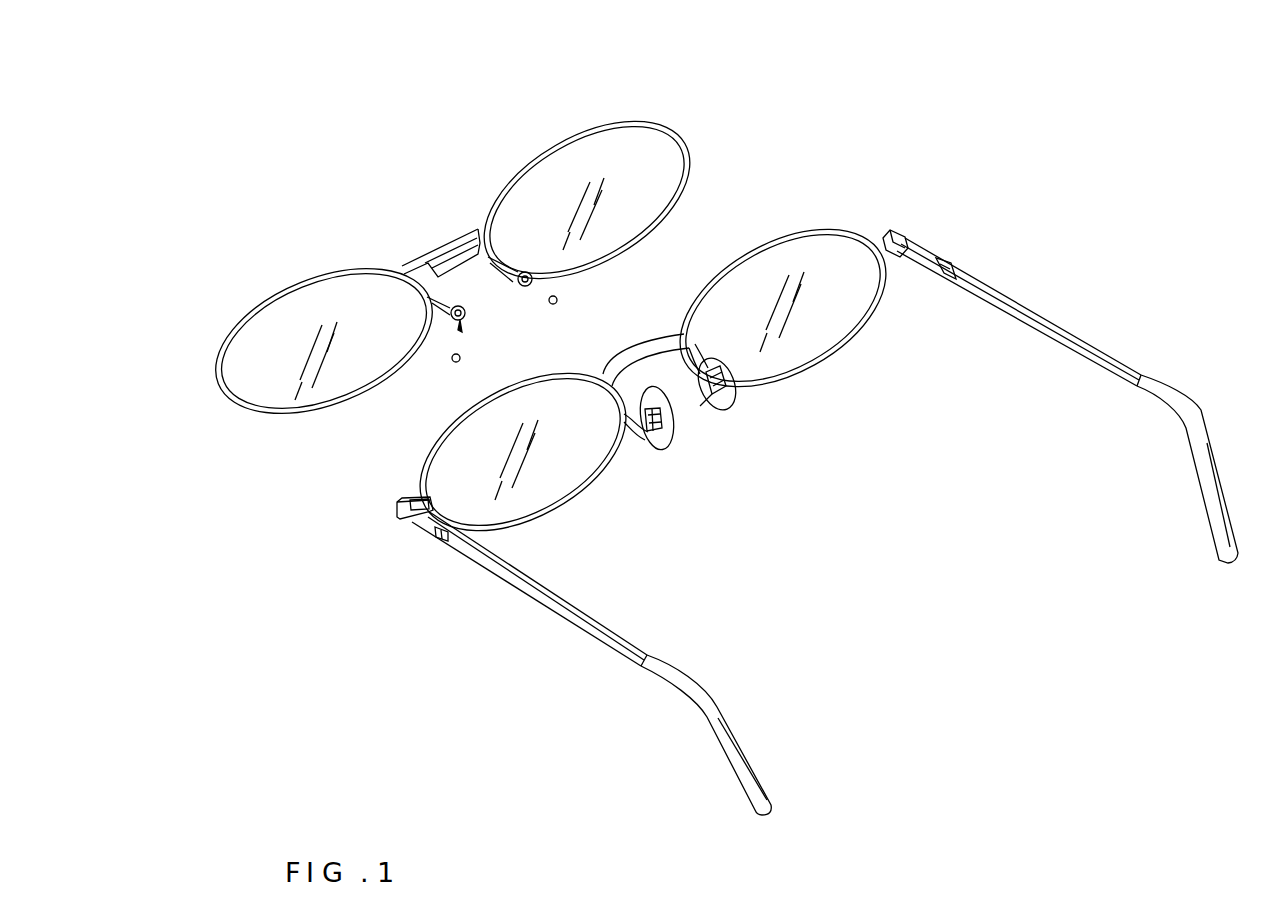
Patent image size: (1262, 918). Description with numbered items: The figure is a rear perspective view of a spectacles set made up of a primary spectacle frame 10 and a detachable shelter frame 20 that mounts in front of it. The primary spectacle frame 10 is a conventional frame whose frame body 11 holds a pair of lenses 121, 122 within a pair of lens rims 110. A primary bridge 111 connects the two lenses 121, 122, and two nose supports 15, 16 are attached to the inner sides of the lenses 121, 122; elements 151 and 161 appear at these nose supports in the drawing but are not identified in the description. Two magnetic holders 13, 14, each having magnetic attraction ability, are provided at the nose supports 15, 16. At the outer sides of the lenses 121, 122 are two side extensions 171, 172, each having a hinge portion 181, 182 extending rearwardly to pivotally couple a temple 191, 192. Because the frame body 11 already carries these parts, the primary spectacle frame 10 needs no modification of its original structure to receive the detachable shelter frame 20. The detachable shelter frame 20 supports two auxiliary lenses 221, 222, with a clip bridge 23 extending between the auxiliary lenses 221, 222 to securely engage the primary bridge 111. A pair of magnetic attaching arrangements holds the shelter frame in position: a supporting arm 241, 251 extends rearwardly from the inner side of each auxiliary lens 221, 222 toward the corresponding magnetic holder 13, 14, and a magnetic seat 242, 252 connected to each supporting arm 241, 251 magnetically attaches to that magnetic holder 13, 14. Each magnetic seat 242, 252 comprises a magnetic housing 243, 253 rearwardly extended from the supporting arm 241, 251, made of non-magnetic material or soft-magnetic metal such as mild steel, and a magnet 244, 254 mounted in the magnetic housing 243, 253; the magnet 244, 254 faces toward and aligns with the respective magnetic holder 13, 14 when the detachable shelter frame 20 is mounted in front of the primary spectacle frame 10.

The primary spectacle frame 10 is at (957, 117).
The frame body 11 is at (810, 148).
The lens rims 110 is at (748, 247).
The primary bridge 111 is at (635, 350).
The lens 121 is at (530, 490).
The lens 122 is at (830, 262).
The magnetic holder 13 is at (626, 414).
The magnetic holder 14 is at (740, 400).
The nose support 15 is at (665, 437).
The nose pad arm 151 is at (655, 440).
The nose support 16 is at (750, 345).
The nose pad arm 161 is at (707, 410).
The side extension 171 is at (403, 520).
The side extension 172 is at (905, 233).
The hinge portion 181 is at (444, 540).
The hinge portion 182 is at (953, 262).
The temple 191 is at (537, 597).
The temple 192 is at (1062, 325).
The detachable shelter frame 20 is at (413, 138).
The auxiliary lens 221 is at (300, 307).
The auxiliary lens 222 is at (547, 173).
The clip bridge 23 is at (455, 275).
The supporting arm 241 is at (447, 310).
The magnetic seat 242 is at (282, 363).
The magnetic housing 243 is at (452, 318).
The magnet 244 is at (457, 360).
The supporting arm 251 is at (518, 277).
The magnetic seat 252 is at (633, 127).
The magnetic housing 253 is at (532, 282).
The magnet 254 is at (560, 300).